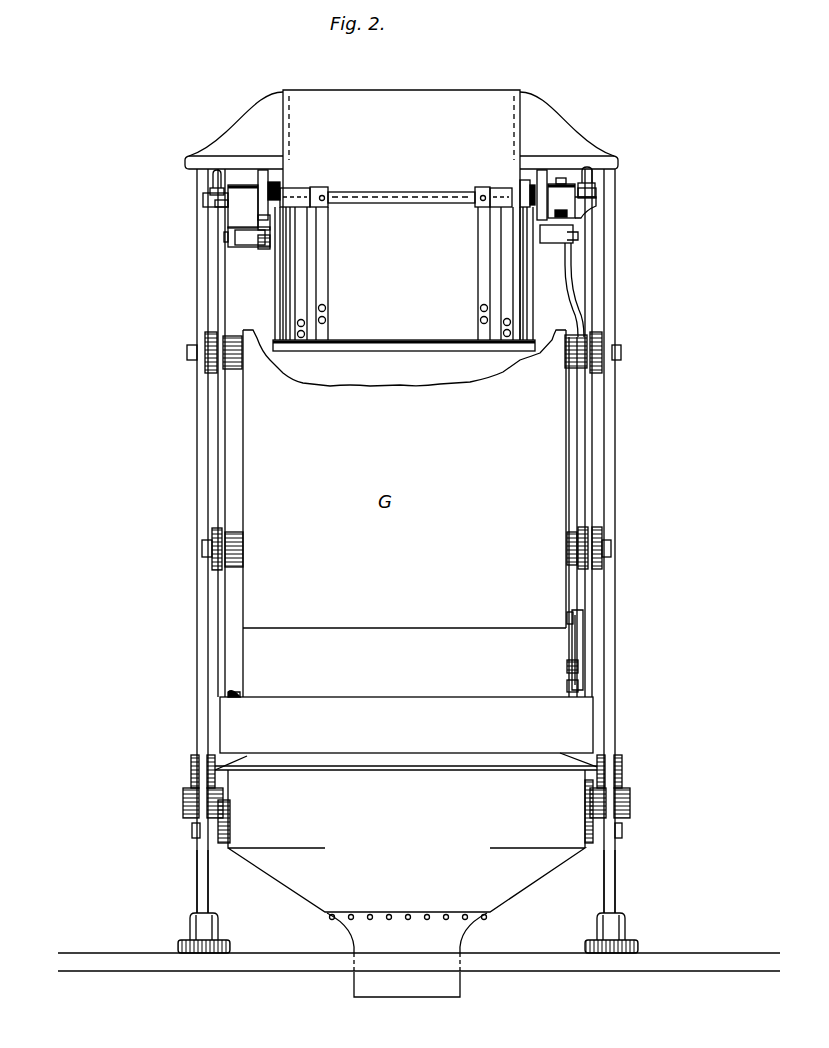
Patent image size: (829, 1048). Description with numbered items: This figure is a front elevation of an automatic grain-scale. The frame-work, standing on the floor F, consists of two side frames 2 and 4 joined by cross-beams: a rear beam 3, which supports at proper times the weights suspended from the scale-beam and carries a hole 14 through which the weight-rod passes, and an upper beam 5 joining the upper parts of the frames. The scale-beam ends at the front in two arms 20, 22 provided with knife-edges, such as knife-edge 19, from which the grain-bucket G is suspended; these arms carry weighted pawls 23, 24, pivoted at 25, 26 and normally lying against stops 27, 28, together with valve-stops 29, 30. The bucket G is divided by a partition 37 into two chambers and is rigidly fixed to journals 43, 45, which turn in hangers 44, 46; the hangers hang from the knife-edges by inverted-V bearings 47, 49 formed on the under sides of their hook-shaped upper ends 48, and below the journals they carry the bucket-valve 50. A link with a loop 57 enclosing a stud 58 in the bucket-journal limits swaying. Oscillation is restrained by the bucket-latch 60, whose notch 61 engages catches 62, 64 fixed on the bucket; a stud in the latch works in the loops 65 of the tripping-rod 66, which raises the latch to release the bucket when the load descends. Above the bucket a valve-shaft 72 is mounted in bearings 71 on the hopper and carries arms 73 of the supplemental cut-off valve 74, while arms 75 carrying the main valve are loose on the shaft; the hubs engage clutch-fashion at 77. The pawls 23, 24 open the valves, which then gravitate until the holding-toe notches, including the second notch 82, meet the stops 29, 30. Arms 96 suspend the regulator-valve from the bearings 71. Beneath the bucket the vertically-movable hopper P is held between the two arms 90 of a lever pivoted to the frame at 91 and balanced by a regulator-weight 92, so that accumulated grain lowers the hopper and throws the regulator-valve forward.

The hole 14 is at (420, 104).
The hook-shaped upper ends 48 is at (216, 170).
The arm 22 is at (245, 192).
The weighted pawl 24 is at (263, 193).
The pivot 26 is at (282, 192).
The bearings 71 is at (292, 196).
The clutch engagement of hubs 77 is at (322, 190).
The valve-shaft 72 is at (392, 193).
The pivot 25 is at (526, 183).
The weighted pawl 23 is at (542, 170).
The notch 61 is at (560, 178).
The arm 20 is at (566, 198).
The inverted-V-shaped bearing 47 is at (597, 190).
The knife-edge 19 is at (598, 201).
The stop 27 is at (549, 217).
The inverted-V-shaped bearing 49 is at (207, 196).
The stop 28 is at (265, 222).
The valve-stop 30 is at (218, 247).
The second notch 82 is at (253, 250).
The arms 96 is at (277, 275).
The arms 75 is at (300, 285).
The arms 73 is at (322, 258).
The supplemental cut-off valve 74 is at (407, 345).
The valve-stop 29 is at (566, 256).
The tripping-rod 66 is at (572, 430).
The partition or wall 37 is at (348, 375).
The bucket-valve or bottom 50 is at (398, 707).
The loops 65 is at (583, 625).
The bucket-latch 60 is at (576, 652).
The bucket-catch 62 is at (572, 667).
The bucket-catch 64 is at (572, 686).
The cross-beam 3 is at (188, 776).
The arms of lever 90 is at (229, 824).
The pivot 91 is at (196, 835).
The vertically-movable hopper P is at (302, 883).
The regulator-weight 92 is at (450, 944).
The hanger 46 is at (222, 470).
The hanger 44 is at (587, 475).
The side frame 4 is at (200, 884).
The side frame 2 is at (610, 889).
The cross-beam 5 is at (596, 356).
The loop 57 is at (208, 540).
The shoulder screw or stud 58 is at (207, 556).
The journal 45 is at (238, 552).
The journal 43 is at (572, 548).
The floor F is at (680, 961).